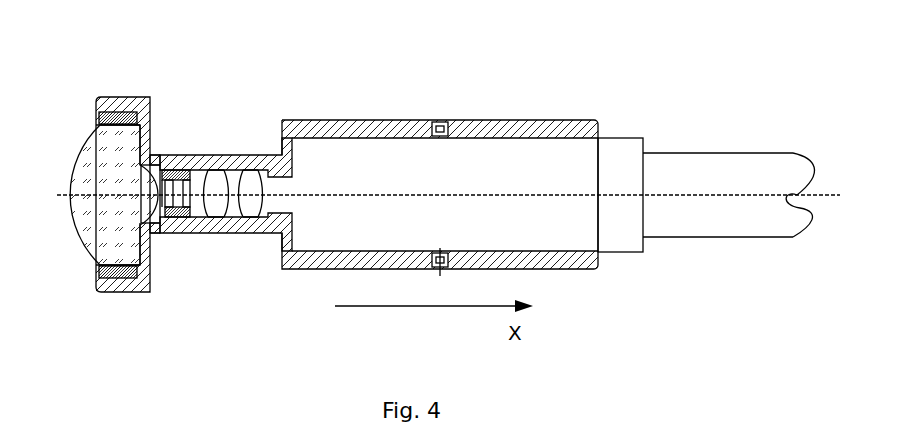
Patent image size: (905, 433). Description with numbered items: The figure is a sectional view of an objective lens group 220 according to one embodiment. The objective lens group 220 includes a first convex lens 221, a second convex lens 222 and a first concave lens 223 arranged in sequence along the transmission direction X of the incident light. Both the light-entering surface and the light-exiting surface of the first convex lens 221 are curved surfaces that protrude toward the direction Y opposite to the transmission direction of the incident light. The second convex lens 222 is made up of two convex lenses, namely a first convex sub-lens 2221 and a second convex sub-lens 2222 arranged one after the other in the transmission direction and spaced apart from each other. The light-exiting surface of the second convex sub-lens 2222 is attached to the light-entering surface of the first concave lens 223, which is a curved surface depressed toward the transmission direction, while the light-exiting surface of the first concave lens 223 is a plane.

The objective lens group 220 is at (95, 154).
The first convex lens 221 is at (108, 127).
The second convex lens 222 is at (221, 134).
The first convex sub-lens 2221 is at (202, 168).
The second convex sub-lens 2222 is at (232, 168).
The first concave lens 223 is at (268, 165).